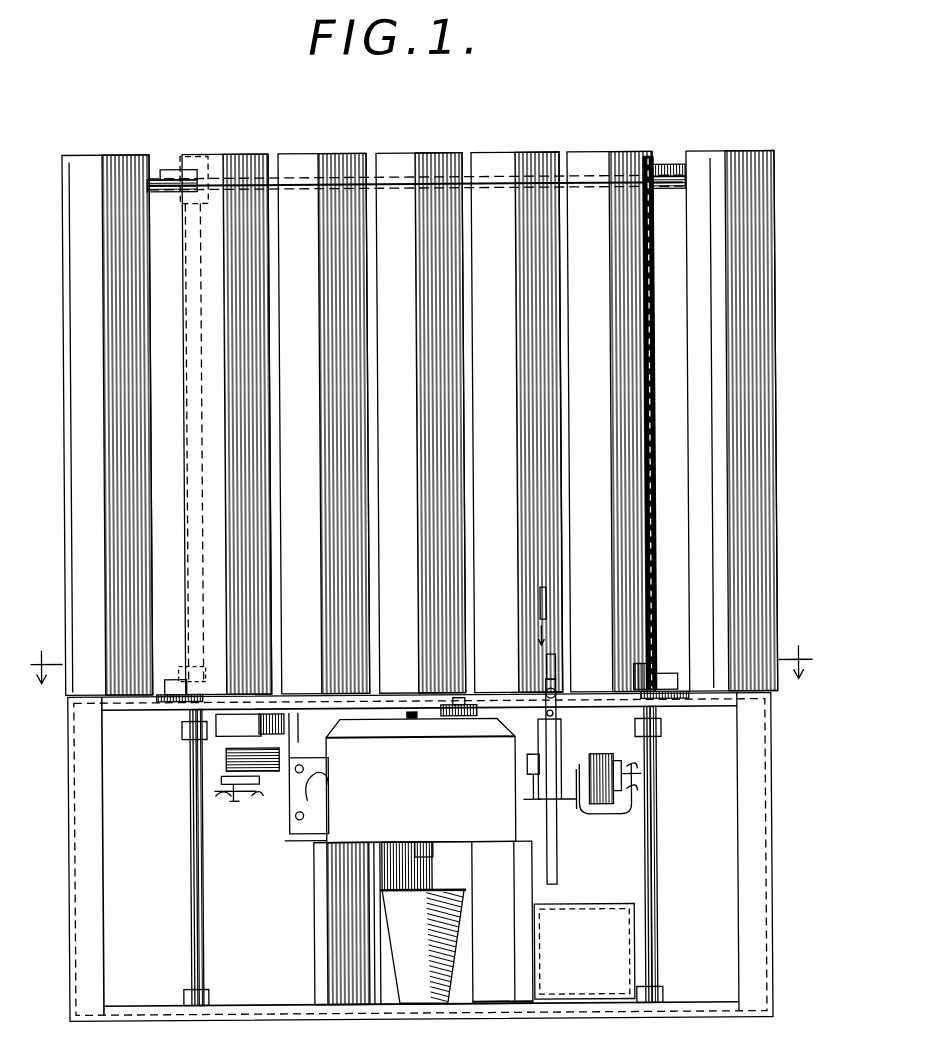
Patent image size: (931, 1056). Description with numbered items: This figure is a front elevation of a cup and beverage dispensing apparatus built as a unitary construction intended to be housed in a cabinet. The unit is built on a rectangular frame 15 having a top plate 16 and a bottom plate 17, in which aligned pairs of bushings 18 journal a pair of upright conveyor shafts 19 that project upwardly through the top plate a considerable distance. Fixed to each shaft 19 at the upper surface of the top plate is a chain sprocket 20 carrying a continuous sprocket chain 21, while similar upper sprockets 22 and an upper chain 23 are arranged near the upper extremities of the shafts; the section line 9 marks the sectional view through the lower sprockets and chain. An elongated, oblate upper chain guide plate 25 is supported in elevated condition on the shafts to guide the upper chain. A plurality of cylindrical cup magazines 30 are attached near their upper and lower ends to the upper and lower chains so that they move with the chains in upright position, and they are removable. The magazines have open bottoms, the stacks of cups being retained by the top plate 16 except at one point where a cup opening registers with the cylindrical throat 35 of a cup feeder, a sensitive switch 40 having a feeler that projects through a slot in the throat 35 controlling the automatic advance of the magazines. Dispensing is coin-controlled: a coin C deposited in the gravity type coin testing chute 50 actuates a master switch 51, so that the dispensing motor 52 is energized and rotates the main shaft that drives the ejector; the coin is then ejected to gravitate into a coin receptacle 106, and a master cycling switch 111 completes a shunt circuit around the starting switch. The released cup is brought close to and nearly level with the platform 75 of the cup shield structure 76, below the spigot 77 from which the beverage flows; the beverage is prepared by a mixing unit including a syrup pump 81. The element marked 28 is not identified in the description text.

The section line 9 is at (421, 650).
The rectangular frame 15 is at (99, 857).
The top plate 16 is at (128, 712).
The bottom plate 17 is at (126, 1003).
The bushings 18 is at (183, 736).
The upright conveyor shafts 19 is at (195, 160).
The chain sprocket 20 is at (175, 685).
The sprocket chain 21 is at (172, 699).
The upper sprockets 22 is at (172, 168).
The upper chain 23 is at (182, 191).
The upper chain guide plate 25 is at (362, 180).
The motor 28 is at (258, 770).
The cup magazines 30 is at (728, 293).
The cylindrical throat 35 is at (392, 722).
The sensitive switch 40 is at (456, 708).
The coin testing chute 50 is at (556, 862).
The master switch 51 is at (560, 730).
The dispensing motor 52 is at (600, 805).
The platform 75 is at (480, 1002).
The cup shield structure 76 is at (302, 882).
The spigot 77 is at (431, 848).
The syrup pump 81 is at (304, 762).
The coin receptacle 106 is at (606, 953).
The master cycling switch 111 is at (532, 755).
The coin C is at (413, 948).